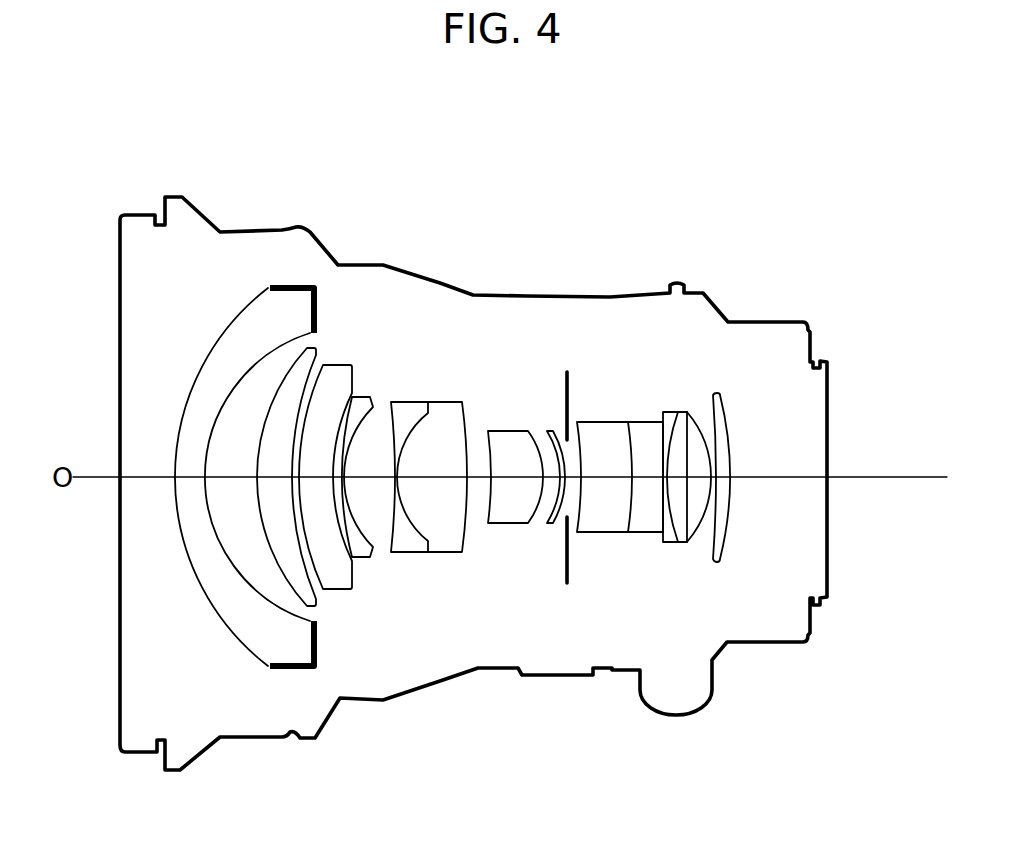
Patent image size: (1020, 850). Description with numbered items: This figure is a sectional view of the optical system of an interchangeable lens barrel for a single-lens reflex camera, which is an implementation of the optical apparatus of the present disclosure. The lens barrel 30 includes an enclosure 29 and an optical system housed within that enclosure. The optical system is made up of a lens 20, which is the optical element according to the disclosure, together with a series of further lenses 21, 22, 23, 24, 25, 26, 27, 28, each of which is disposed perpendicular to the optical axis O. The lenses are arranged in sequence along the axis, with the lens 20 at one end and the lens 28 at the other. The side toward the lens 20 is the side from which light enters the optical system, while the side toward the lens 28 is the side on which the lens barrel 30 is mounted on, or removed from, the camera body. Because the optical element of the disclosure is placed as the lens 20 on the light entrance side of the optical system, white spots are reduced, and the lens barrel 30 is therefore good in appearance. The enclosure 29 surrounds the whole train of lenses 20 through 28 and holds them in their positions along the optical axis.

The lens 20 is at (257, 312).
The lens 21 is at (303, 587).
The lens 22 is at (337, 577).
The lens 23 is at (360, 563).
The lens 24 is at (447, 543).
The lens 25 is at (508, 510).
The lens 26 is at (600, 520).
The lens 27 is at (685, 530).
The lens 28 is at (717, 550).
The enclosure 29 is at (720, 303).
The lens barrel 30 is at (830, 168).